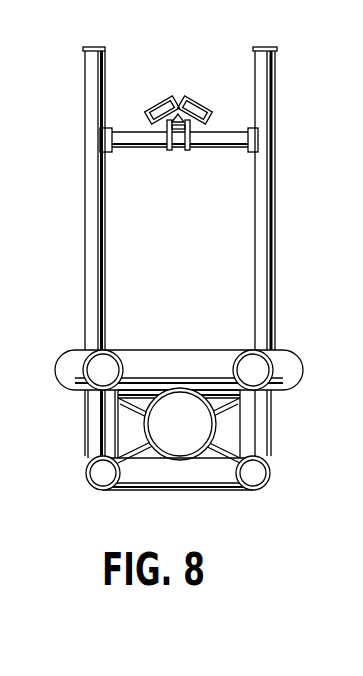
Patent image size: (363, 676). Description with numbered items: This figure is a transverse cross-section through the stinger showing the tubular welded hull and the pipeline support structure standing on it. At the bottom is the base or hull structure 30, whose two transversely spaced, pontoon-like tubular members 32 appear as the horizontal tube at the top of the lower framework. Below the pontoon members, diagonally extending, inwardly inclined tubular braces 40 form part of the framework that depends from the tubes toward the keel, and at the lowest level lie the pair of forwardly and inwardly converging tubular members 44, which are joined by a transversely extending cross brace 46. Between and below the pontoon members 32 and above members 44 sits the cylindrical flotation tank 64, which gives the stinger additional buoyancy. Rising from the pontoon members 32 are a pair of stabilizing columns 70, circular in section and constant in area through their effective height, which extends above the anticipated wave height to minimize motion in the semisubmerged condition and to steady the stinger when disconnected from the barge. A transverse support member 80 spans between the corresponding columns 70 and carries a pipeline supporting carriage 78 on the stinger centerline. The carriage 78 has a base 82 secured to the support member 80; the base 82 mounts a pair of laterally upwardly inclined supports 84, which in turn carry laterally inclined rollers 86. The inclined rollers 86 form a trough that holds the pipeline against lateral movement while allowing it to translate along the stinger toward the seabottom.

The base or hull structure 30 is at (183, 350).
The elongated tubular or pontoon-like members 32 is at (56, 372).
The tubular braces 40 is at (128, 432).
The converging tubular members 44 is at (90, 488).
The transversely extending cross braces 46 is at (213, 476).
The cylindrical flotation tank 64 is at (200, 418).
The stabilizing columns 70 is at (85, 70).
The pipeline supporting carriage 78 is at (207, 100).
The support member 80 is at (110, 140).
The base 82 is at (185, 152).
The laterally upwardly inclined supports 84 is at (151, 111).
The laterally inclined rollers 86 is at (170, 102).